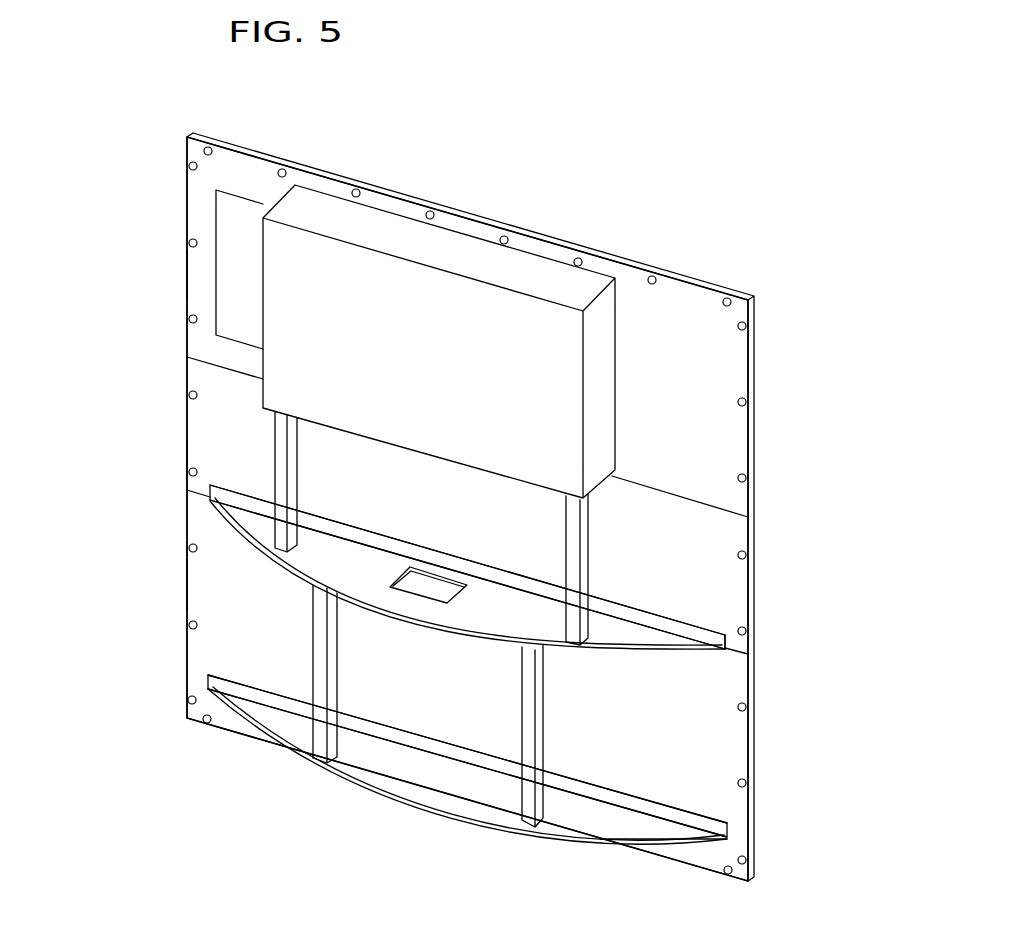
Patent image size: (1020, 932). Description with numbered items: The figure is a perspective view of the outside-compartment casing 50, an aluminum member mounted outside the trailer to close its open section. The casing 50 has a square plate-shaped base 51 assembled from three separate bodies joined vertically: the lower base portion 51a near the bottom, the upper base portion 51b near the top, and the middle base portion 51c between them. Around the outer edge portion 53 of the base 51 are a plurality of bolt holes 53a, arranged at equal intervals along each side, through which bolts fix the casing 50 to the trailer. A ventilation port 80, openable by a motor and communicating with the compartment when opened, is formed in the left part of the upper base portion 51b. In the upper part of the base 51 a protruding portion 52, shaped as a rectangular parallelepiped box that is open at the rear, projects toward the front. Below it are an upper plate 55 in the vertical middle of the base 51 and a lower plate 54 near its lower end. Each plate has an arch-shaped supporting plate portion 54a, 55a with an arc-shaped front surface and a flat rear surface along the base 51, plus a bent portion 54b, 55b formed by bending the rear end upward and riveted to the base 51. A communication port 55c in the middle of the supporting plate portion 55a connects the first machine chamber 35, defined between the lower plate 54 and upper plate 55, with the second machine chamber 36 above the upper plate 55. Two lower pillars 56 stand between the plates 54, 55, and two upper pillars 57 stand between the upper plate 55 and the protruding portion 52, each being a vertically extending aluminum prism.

The outside-compartment casing 50 is at (710, 141).
The base 51 is at (178, 208).
The lower base portion 51a is at (200, 584).
The upper base portion 51b is at (200, 280).
The middle base portion 51c is at (200, 460).
The protruding portion 52 is at (417, 302).
The outer edge portion 53 is at (200, 420).
The bolt holes 53a is at (192, 392).
The lower plate 54 is at (499, 842).
The supporting plate portion 54a is at (570, 823).
The bent portion 54b is at (475, 757).
The upper plate 55 is at (644, 663).
The supporting plate portion 55a is at (637, 637).
The bent portion 55b is at (492, 573).
The communication port 55c is at (428, 584).
The lower pillars 56 is at (320, 628).
The upper pillars 57 is at (283, 453).
The ventilation port 80 is at (241, 215).
The first machine chamber 35 is at (383, 672).
The second machine chamber 36 is at (533, 550).